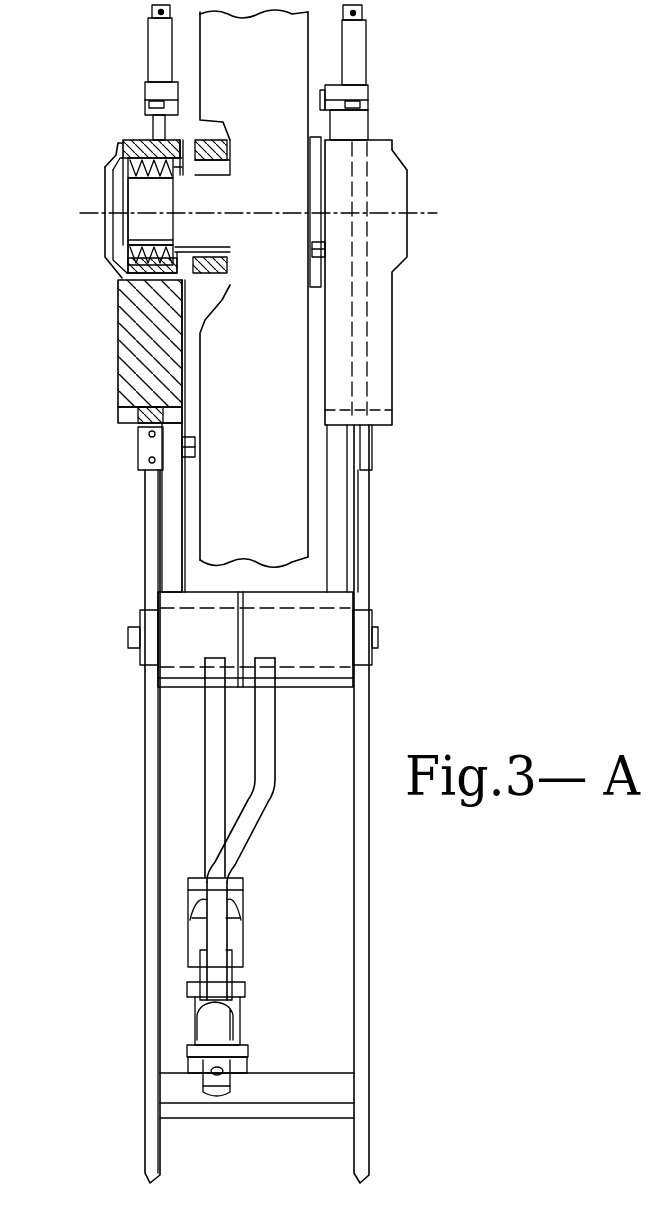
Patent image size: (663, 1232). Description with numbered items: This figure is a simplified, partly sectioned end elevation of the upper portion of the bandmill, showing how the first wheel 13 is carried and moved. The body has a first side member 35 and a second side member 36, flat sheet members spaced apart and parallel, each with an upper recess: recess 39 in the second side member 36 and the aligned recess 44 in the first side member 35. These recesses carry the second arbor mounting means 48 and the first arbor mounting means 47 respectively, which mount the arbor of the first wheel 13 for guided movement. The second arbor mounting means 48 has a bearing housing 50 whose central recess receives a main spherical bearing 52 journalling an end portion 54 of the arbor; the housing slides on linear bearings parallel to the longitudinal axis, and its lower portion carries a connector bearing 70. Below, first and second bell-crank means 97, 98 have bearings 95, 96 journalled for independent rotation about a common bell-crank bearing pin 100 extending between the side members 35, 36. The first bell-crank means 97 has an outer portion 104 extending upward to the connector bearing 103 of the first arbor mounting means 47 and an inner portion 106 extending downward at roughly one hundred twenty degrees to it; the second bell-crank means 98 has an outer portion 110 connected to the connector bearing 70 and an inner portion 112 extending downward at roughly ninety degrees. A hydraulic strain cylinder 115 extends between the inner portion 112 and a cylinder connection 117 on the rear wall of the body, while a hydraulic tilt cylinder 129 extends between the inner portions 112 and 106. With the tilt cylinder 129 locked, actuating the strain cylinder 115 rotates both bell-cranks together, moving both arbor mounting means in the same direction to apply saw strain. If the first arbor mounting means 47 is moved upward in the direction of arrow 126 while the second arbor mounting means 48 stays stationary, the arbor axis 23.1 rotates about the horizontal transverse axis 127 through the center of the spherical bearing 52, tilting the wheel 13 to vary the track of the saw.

The first wheel 13 is at (293, 360).
The upper recess 39 is at (90, 112).
The upper recess 44 is at (387, 120).
The first arbor mounting means 47 is at (420, 157).
The arrow 126 is at (477, 177).
The axis of the first wheel arbor 23.1 is at (422, 215).
The second arbor mounting means 48 is at (85, 277).
The main spherical bearing 52 is at (118, 143).
The end portion of the arbor 54 is at (150, 212).
The horizontal transverse axis 127 is at (90, 200).
The bearing housing 50 is at (118, 353).
The connector bearing 70 is at (140, 447).
The second side member 36 is at (143, 502).
The outer portion of the second bell-crank means 110 is at (170, 547).
The connector bearing 103 is at (372, 442).
The first side member 35 is at (368, 498).
The outer portion of the first bell-crank means 104 is at (338, 528).
The bearing 95 is at (327, 567).
The bearing 96 is at (217, 567).
The bell-crank bearing pin 100 is at (375, 630).
The inner portion of the second bell-crank means 112 is at (205, 762).
The inner portion of the first bell-crank means 106 is at (273, 790).
The first bell-crank means 97 is at (280, 825).
The second bell-crank means 98 is at (180, 823).
The hydraulic tilt cylinder 129 is at (243, 930).
The hydraulic strain cylinder 115 is at (247, 1017).
The cylinder connection 117 is at (230, 1083).